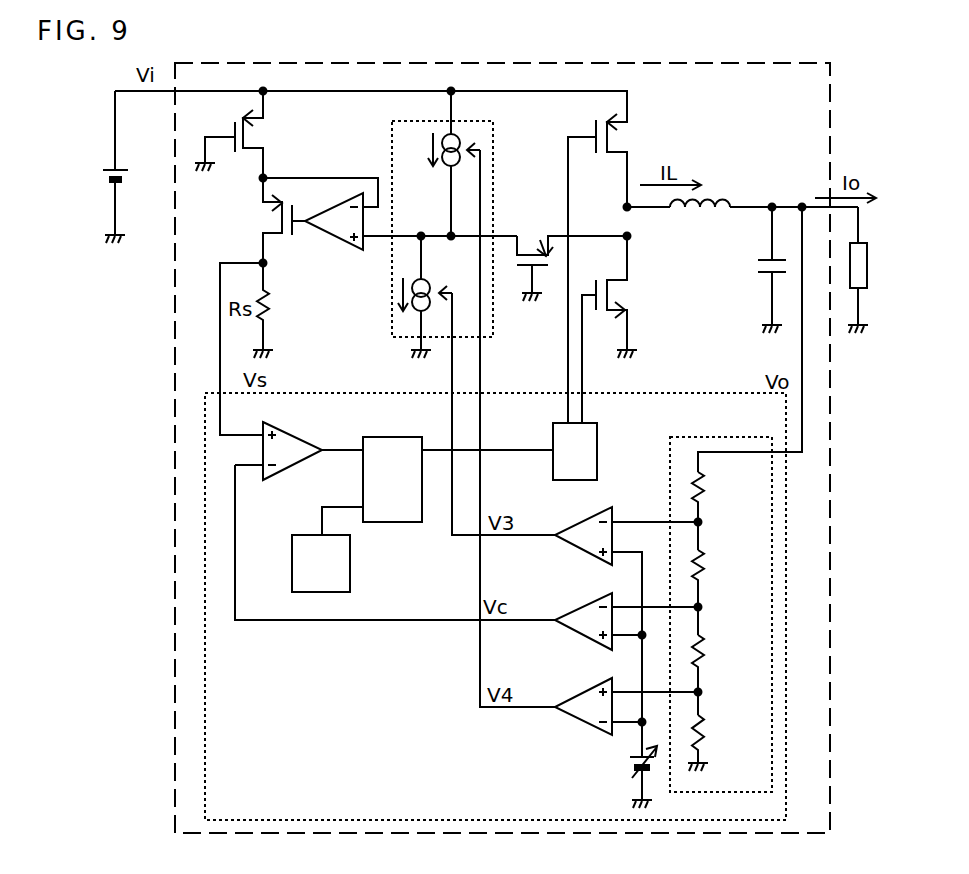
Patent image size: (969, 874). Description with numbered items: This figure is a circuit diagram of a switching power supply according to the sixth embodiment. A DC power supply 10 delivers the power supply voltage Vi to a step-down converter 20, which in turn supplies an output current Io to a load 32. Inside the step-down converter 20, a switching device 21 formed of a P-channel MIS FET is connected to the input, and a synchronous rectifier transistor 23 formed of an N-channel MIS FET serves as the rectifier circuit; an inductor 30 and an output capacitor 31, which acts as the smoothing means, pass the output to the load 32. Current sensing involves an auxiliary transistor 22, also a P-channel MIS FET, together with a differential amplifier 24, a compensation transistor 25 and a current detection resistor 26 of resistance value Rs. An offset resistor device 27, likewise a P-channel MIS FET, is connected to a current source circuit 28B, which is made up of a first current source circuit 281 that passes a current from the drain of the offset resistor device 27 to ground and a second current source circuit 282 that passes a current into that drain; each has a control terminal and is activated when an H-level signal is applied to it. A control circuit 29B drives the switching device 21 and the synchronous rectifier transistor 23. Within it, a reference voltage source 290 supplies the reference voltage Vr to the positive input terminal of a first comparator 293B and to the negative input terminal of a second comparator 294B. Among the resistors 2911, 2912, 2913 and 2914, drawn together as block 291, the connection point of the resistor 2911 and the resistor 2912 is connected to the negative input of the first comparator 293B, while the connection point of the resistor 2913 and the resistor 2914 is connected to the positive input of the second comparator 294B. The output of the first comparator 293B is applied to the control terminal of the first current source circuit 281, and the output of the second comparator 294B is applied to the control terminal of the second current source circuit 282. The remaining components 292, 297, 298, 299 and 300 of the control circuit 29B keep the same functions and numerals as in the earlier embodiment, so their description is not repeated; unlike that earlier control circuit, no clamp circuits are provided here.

The DC power supply 10 is at (125, 167).
The step-down converter 20 is at (175, 265).
The switching device 21 is at (628, 136).
The auxiliary transistor 22 is at (262, 136).
The synchronous rectifier transistor 23 is at (632, 297).
The differential amplifier 24 is at (362, 248).
The compensation transistor 25 is at (262, 221).
The current detection resistor 26 is at (268, 315).
The offset resistor device 27 is at (530, 233).
The current source circuit 28B is at (392, 163).
The first current source circuit 281 is at (415, 312).
The second current source circuit 282 is at (447, 168).
The control circuit 29B is at (724, 393).
The reference voltage source 290 is at (625, 766).
The voltage divider resistor ladder 291 is at (670, 500).
The resistor 2911 is at (706, 490).
The resistor 2912 is at (706, 565).
The resistor 2913 is at (706, 650).
The resistor 2914 is at (706, 735).
The comparator 292 is at (578, 632).
The first comparator 293B is at (578, 552).
The second comparator 294B is at (580, 725).
The oscillator 297 is at (350, 565).
The comparator 298 is at (295, 437).
The RS flip-flop 299 is at (363, 465).
The driver circuit 300 is at (598, 442).
The inductor 30 is at (712, 196).
The output capacitor 31 is at (757, 268).
The load 32 is at (866, 246).